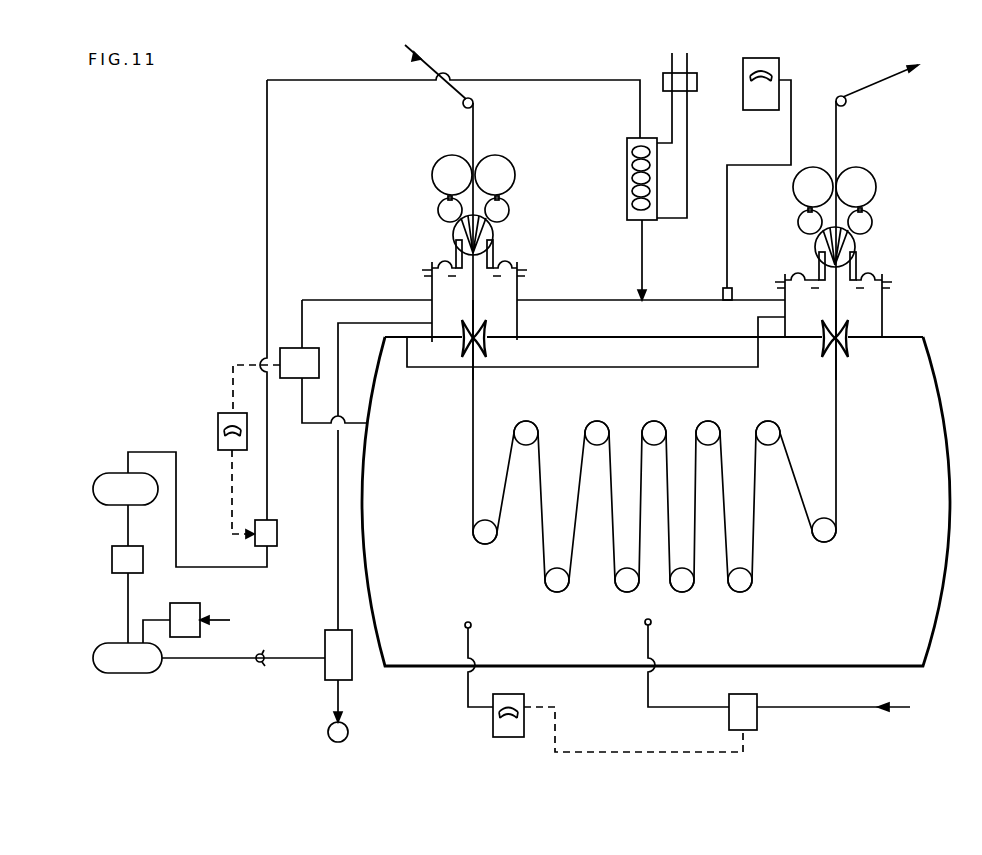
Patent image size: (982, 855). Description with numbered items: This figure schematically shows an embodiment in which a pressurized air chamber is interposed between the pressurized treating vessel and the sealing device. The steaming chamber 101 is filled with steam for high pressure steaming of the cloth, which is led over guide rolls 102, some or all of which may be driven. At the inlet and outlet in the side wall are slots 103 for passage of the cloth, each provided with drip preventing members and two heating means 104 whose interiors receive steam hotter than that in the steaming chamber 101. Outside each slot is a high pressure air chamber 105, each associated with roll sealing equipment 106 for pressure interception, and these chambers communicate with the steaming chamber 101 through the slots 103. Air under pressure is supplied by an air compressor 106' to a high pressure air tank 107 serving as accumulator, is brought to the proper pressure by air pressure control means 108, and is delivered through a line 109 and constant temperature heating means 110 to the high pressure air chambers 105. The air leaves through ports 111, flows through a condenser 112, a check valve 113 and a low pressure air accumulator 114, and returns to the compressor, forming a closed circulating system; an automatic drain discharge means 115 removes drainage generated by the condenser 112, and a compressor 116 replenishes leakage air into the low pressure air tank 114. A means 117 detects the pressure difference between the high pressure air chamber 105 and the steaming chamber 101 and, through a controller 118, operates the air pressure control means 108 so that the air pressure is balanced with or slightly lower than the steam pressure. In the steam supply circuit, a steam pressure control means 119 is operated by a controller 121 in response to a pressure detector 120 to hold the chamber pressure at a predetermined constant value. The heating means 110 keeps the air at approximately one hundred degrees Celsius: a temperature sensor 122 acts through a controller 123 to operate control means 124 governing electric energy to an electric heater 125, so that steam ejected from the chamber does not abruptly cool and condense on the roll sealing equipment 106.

The steaming chamber 101 is at (947, 425).
The guide rolls 102 is at (750, 588).
The slots 103 is at (476, 352).
The heating means 104 is at (467, 349).
The high pressure air chamber 105 is at (438, 271).
The roll sealing equipment 106 is at (681, 194).
The air compressor 106' is at (105, 549).
The high pressure air tank 107 is at (105, 474).
The air pressure control means 108 is at (277, 534).
The line 109 is at (267, 262).
The constant temperature heating means 110 is at (627, 198).
The ports 111 is at (432, 342).
The condenser 112 is at (352, 678).
The check valve 113 is at (262, 664).
The low pressure air accumulator 114 is at (113, 673).
The automatic drain discharge means 115 is at (346, 739).
The compressor 116 is at (200, 610).
The pressure difference detecting means 117 is at (287, 348).
The controller 118 is at (218, 415).
The steam pressure control means 119 is at (757, 720).
The pressure detector 120 is at (471, 624).
The controller 121 is at (493, 726).
The temperature sensor 122 is at (730, 288).
The controller 123 is at (779, 80).
The control means 124 is at (697, 74).
The electric heater 125 is at (634, 141).